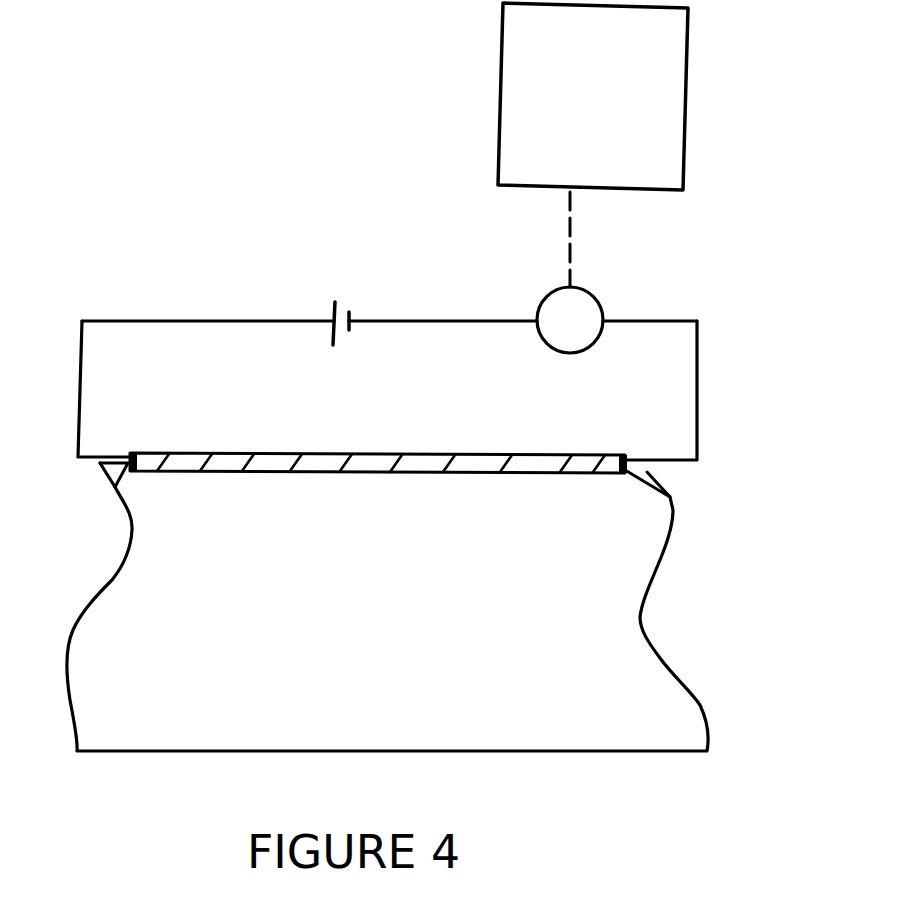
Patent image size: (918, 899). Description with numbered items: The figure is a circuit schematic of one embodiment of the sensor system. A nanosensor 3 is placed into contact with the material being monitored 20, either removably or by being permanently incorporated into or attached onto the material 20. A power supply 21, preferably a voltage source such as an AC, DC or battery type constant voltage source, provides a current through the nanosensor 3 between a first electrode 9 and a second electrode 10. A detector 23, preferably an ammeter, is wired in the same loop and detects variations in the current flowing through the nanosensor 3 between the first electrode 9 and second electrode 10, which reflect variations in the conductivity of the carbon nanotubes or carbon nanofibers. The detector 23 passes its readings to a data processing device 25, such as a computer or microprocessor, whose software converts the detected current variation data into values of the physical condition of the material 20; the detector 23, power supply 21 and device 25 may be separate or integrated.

The nanosensor 3 is at (222, 438).
The first electrode 9 is at (670, 497).
The second electrode 10 is at (115, 487).
The material being monitored 20 is at (637, 633).
The power supply 21 is at (369, 300).
The detector 23 is at (600, 303).
The data processing device 25 is at (688, 105).